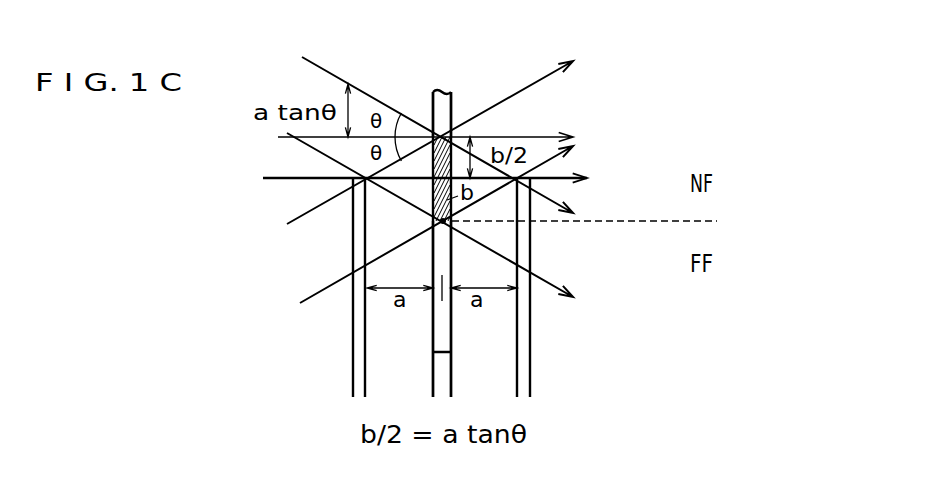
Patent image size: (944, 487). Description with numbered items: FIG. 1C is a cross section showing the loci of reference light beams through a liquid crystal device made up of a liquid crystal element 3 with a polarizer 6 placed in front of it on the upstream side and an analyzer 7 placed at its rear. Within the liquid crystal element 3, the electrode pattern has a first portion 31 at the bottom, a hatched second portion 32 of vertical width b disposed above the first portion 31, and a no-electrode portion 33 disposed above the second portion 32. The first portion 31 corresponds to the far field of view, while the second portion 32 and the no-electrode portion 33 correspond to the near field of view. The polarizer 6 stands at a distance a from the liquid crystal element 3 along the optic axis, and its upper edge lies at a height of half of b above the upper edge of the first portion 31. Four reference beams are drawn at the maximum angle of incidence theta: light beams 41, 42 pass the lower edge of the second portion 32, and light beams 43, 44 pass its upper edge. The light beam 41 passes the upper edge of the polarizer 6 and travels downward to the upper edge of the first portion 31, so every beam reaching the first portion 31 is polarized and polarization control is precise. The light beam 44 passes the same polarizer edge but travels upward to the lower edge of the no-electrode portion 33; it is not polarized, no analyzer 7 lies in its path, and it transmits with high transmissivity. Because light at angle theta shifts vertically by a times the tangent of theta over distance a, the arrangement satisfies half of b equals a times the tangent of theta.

The liquid crystal element 3 is at (443, 226).
The polarizer 6 is at (353, 357).
The analyzer 7 is at (531, 357).
The first portion 31 is at (452, 334).
The second portion 32 is at (436, 204).
The no-electrode portion 33 is at (447, 102).
The light beam 41 is at (548, 282).
The light beam 42 is at (545, 162).
The light beam 43 is at (545, 197).
The light beam 44 is at (543, 81).